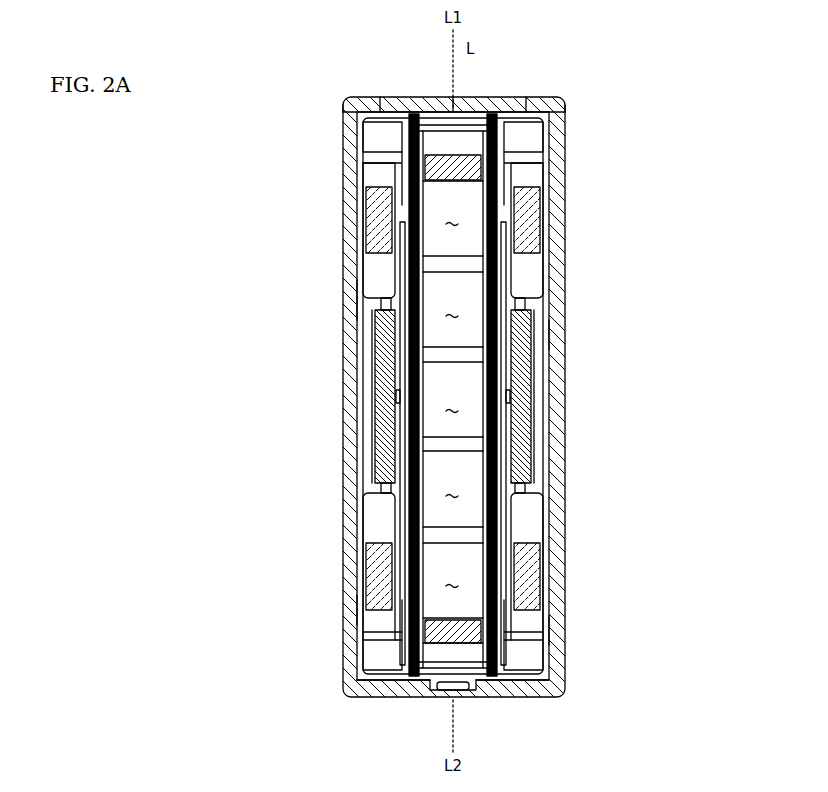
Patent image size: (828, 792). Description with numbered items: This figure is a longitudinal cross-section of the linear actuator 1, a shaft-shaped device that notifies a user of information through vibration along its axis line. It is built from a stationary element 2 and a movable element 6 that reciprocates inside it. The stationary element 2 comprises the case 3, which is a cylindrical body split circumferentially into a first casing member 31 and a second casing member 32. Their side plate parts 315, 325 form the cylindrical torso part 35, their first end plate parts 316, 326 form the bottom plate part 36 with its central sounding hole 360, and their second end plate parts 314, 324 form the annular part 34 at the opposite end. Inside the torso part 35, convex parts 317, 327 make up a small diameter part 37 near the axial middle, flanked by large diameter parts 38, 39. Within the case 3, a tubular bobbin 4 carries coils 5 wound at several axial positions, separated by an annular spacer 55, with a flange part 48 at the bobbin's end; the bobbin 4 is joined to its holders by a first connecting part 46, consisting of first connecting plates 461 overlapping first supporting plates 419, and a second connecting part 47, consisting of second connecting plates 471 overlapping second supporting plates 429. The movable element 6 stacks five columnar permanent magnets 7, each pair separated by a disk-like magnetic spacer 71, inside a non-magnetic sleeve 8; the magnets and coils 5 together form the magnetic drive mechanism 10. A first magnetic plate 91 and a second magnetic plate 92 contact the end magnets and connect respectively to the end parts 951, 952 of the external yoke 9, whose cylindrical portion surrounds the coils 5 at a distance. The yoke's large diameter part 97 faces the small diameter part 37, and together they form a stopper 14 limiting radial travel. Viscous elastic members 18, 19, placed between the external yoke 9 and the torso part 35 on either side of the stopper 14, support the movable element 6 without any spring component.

The linear actuator 1 is at (652, 128).
The stationary element 2 is at (340, 135).
The case 3 is at (572, 142).
The bobbin 4 is at (372, 328).
The coils 5 is at (486, 442).
The movable element 6 is at (508, 440).
The permanent magnets 7 is at (453, 399).
The sleeve 8 is at (400, 265).
The external yoke 9 is at (389, 268).
The magnetic drive mechanism 10 is at (512, 277).
The stopper 14 is at (451, 396).
The viscous elastic member 18 is at (372, 196).
The viscous elastic member 19 is at (367, 560).
The first casing member 31 is at (342, 610).
The second casing member 32 is at (568, 628).
The annular part 34 is at (462, 75).
The torso part 35 is at (461, 315).
The bottom plate part 36 is at (469, 714).
The small diameter part 37 is at (451, 396).
The large diameter part 38 is at (380, 212).
The large diameter part 39 is at (350, 578).
The first connecting part 46 is at (402, 360).
The second connecting part 47 is at (400, 662).
The flange part 48 is at (387, 587).
The spacer 55 is at (400, 478).
The spacer 71 is at (465, 537).
The first magnetic plate 91 is at (457, 150).
The second magnetic plate 92 is at (455, 645).
The large diameter part 97 is at (548, 425).
The second end plate part 314 is at (367, 100).
The side plate part 315 is at (345, 297).
The first end plate part 316 is at (385, 702).
The convex part 317 is at (378, 378).
The second end plate part 324 is at (540, 102).
The side plate part 325 is at (562, 335).
The first end plate part 326 is at (523, 698).
The convex part 327 is at (540, 382).
The sounding hole 360 is at (478, 682).
The first supporting plates 419 is at (390, 143).
The second supporting plates 429 is at (390, 618).
The first connecting plates 461 is at (423, 110).
The second connecting plates 471 is at (360, 688).
The end part 951 is at (392, 160).
The end part 952 is at (397, 643).